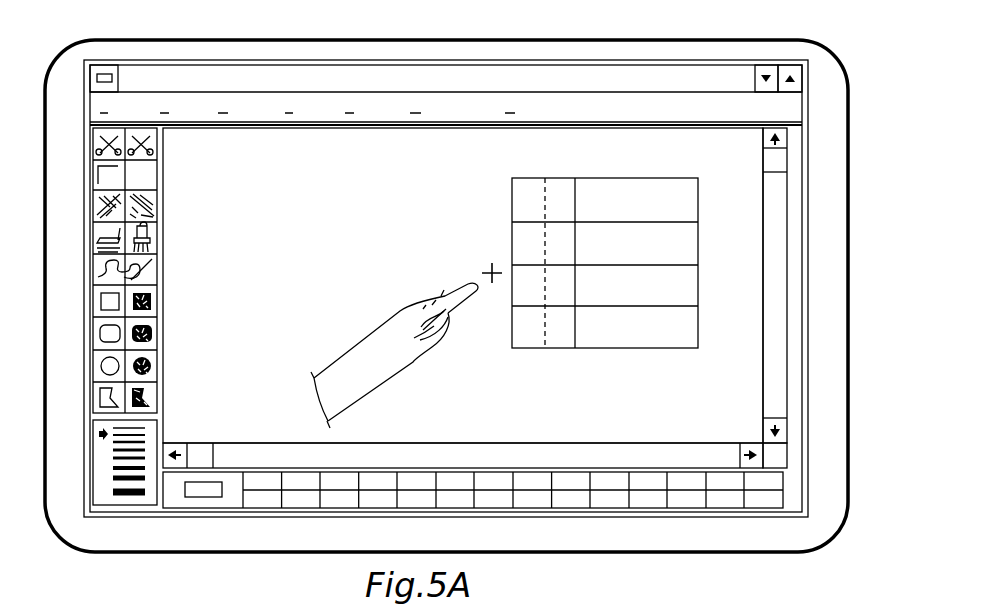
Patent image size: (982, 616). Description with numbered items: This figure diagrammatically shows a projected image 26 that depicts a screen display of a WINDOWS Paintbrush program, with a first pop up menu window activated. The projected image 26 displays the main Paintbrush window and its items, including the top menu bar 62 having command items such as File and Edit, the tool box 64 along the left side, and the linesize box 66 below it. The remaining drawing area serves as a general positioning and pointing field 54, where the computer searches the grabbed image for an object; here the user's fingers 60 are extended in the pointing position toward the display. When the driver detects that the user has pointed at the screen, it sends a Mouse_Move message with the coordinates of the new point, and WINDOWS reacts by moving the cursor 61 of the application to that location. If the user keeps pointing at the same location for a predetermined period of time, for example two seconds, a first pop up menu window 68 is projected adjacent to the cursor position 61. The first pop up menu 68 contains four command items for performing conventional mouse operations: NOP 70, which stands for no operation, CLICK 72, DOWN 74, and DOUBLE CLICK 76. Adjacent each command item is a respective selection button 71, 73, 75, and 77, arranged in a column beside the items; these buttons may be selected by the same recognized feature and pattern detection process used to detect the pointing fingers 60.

The projected image 26 is at (748, 42).
The general positioning and pointing field 54 is at (735, 382).
The two fingers 60 is at (383, 377).
The cursor 61 is at (490, 269).
The top menu bar 62 is at (584, 109).
The tool box 64 is at (150, 163).
The linesize box 66 is at (147, 457).
The first pop up menu window 68 is at (607, 266).
The NOP command item 70 is at (668, 192).
The selection button 71 is at (557, 195).
The CLICK command item 72 is at (685, 247).
The selection button 73 is at (531, 234).
The DOWN command item 74 is at (685, 287).
The selection button 75 is at (528, 289).
The DOUBLE CLICK command item 76 is at (685, 330).
The selection button 77 is at (559, 335).